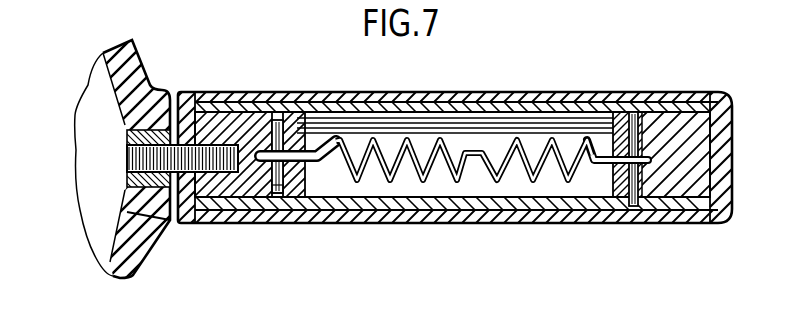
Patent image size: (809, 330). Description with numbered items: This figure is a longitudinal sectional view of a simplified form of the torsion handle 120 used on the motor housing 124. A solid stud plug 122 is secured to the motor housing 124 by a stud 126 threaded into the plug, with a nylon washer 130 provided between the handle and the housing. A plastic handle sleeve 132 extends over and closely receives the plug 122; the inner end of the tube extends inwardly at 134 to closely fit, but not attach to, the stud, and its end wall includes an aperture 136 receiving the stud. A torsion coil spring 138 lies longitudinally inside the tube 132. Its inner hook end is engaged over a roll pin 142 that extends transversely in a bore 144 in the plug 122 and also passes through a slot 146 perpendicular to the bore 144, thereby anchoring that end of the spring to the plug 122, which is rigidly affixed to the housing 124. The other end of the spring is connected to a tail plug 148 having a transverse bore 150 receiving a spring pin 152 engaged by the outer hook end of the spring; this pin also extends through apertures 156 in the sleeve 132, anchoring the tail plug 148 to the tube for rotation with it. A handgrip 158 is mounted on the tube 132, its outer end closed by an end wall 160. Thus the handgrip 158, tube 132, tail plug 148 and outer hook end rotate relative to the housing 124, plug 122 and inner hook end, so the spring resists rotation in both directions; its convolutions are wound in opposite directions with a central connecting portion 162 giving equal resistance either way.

The handle 120 is at (573, 86).
The solid stud plug 122 is at (247, 125).
The motor housing 124 is at (132, 64).
The stud 126 is at (127, 157).
The nylon washer 130 is at (175, 195).
The plastic handle sleeve 132 is at (436, 212).
The inwardly extending inner end 134 is at (246, 197).
The aperture 136 is at (193, 100).
The torsion coil spring 138 is at (548, 181).
The roll pin 142 is at (307, 197).
The bore 144 is at (298, 122).
The slot 146 is at (274, 197).
The tail plug 148 is at (680, 188).
The transverse bore 150 is at (653, 127).
The spring pin 152 is at (628, 207).
The apertures 156 is at (647, 115).
The handgrip 158 is at (455, 96).
The end wall 160 is at (724, 139).
The central connecting portion 162 is at (482, 150).